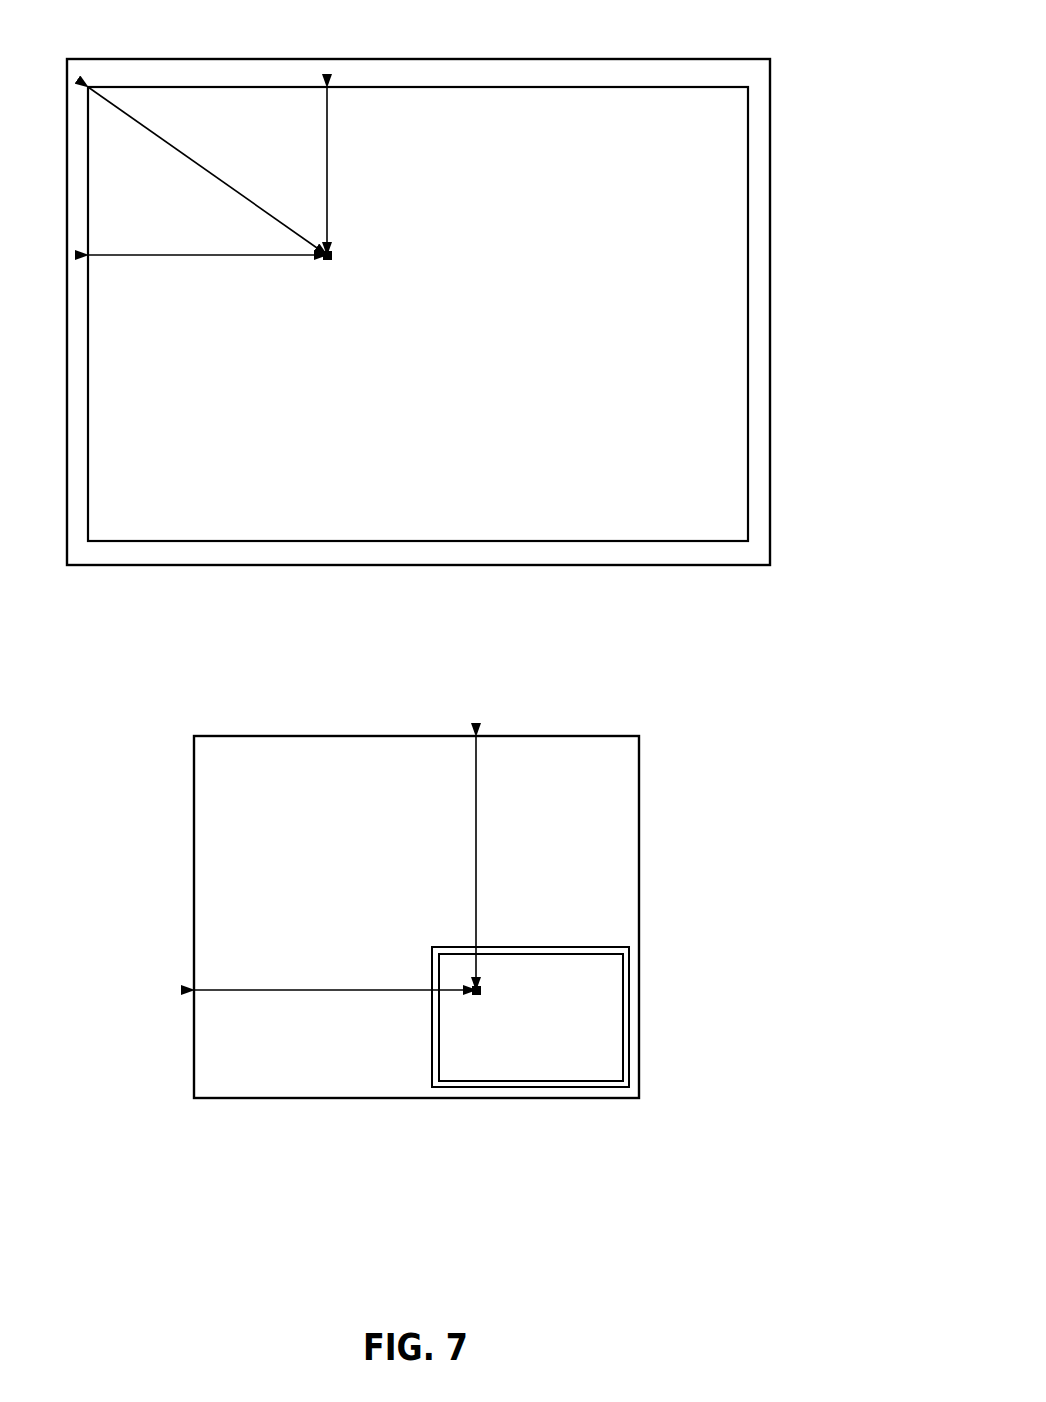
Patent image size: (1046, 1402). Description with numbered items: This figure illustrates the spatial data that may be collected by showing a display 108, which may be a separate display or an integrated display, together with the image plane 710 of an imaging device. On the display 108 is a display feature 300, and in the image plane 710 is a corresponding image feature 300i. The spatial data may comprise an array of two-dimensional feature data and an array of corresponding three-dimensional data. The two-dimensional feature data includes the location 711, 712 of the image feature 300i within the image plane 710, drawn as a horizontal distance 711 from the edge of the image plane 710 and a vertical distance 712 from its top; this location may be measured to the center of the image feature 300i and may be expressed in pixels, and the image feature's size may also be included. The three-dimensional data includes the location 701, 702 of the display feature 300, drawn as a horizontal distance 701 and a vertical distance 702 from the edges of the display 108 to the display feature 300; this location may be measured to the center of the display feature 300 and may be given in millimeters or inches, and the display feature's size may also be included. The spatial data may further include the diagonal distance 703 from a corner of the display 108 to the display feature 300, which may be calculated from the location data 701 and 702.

The display 108 is at (777, 111).
The display feature 300 is at (333, 258).
The display feature location 701 is at (160, 258).
The display feature location 702 is at (332, 172).
The distance 703 is at (182, 152).
The image plane 710 is at (640, 760).
The image feature location 711 is at (272, 993).
The image feature location 712 is at (482, 833).
The image feature 300i is at (483, 989).